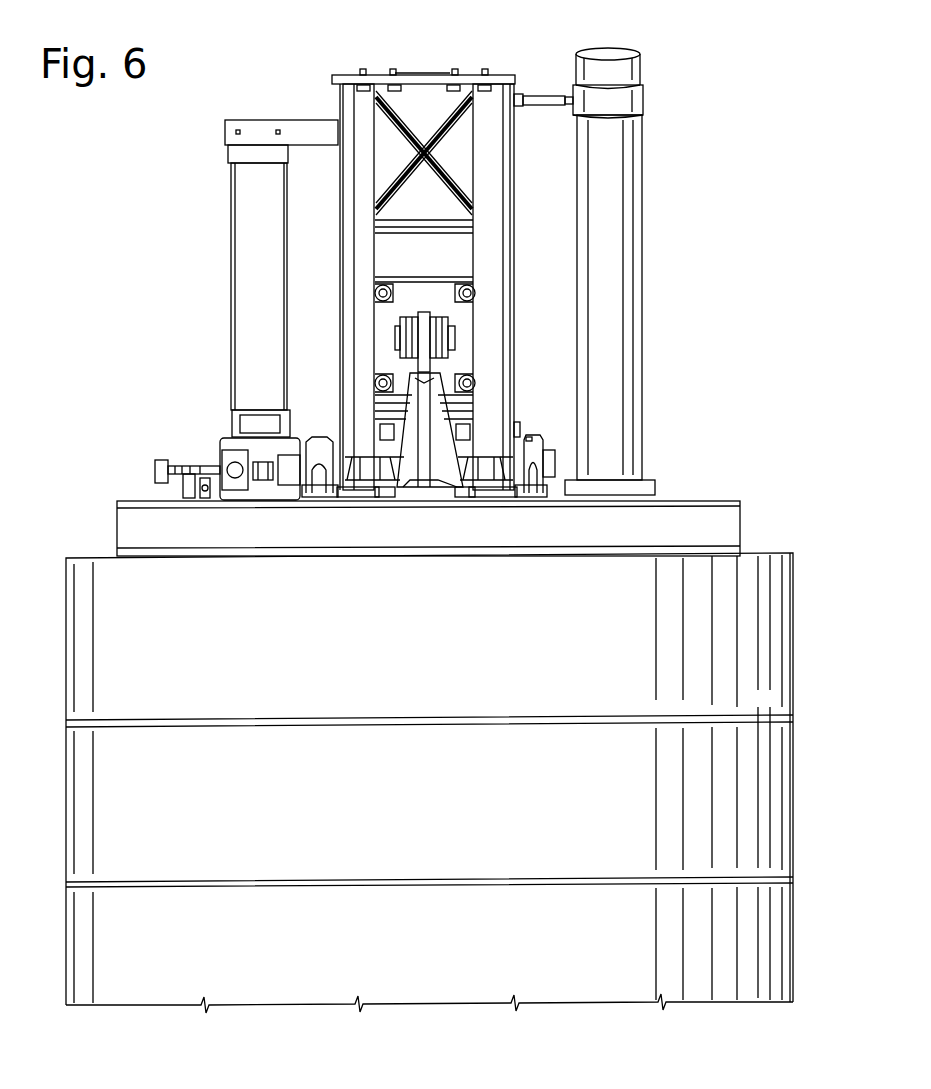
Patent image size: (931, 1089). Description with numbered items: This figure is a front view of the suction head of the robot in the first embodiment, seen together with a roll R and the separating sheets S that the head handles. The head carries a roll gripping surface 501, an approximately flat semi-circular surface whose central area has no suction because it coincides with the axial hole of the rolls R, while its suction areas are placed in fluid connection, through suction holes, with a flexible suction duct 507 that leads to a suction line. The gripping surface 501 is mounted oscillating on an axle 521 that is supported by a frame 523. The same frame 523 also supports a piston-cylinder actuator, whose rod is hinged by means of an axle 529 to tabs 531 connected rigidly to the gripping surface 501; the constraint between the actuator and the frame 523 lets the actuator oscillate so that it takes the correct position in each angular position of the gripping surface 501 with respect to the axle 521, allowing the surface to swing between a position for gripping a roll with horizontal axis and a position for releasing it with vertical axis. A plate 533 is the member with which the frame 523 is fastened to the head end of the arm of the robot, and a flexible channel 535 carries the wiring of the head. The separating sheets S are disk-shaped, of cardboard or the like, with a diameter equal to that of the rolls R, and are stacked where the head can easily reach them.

The roll gripping surface 501 is at (105, 546).
The flexible suction duct 507 is at (620, 190).
The axle 521 is at (557, 463).
The frame 523 is at (514, 235).
The axle 529 is at (455, 337).
The tabs 531 is at (410, 428).
The plate 533 is at (420, 77).
The flexible channel 535 is at (253, 332).
The separating sheets S is at (86, 722).
The rolls R is at (770, 698).